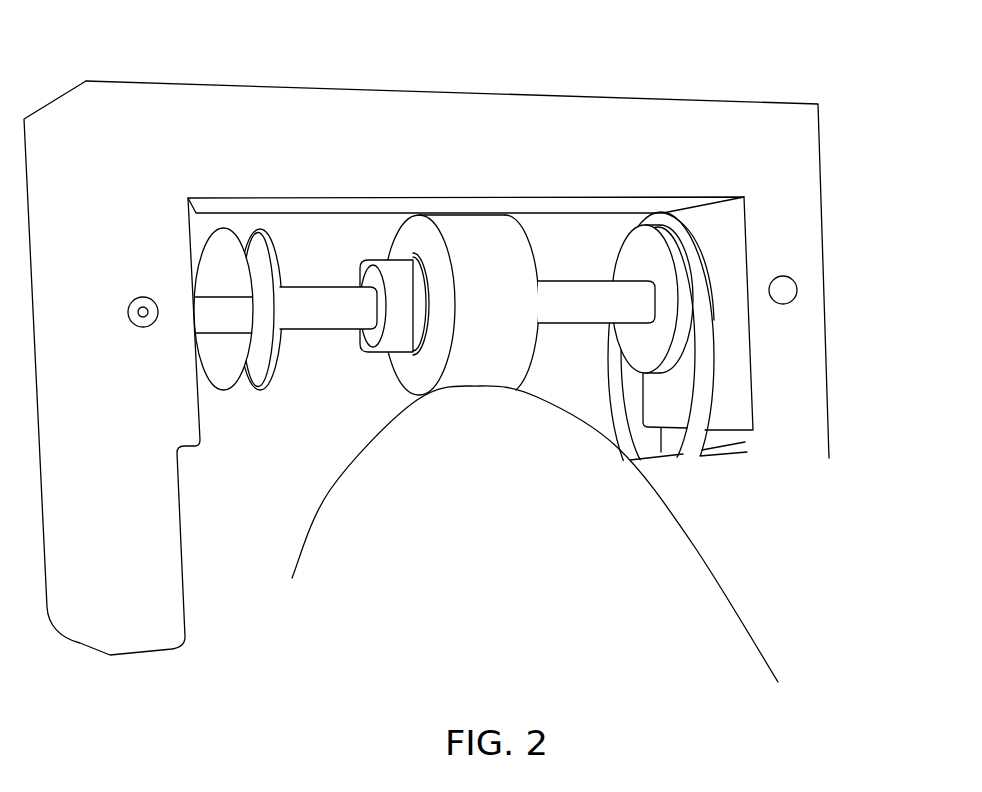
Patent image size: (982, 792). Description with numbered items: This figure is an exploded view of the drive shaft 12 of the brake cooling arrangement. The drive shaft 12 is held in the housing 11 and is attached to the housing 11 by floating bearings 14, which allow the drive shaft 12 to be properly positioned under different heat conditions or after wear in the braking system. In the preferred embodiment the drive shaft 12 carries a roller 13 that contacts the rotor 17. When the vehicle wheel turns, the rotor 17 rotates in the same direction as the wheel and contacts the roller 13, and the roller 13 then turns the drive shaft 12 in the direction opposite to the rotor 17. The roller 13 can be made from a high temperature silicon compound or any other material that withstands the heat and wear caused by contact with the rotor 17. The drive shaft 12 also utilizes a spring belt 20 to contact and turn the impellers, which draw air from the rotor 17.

The housing 11 is at (619, 137).
The drive shaft 12 is at (317, 307).
The roller 13 is at (488, 287).
The floating bearings 14 is at (783, 290).
The rotor 17 is at (688, 583).
The spring belt 20 is at (700, 413).